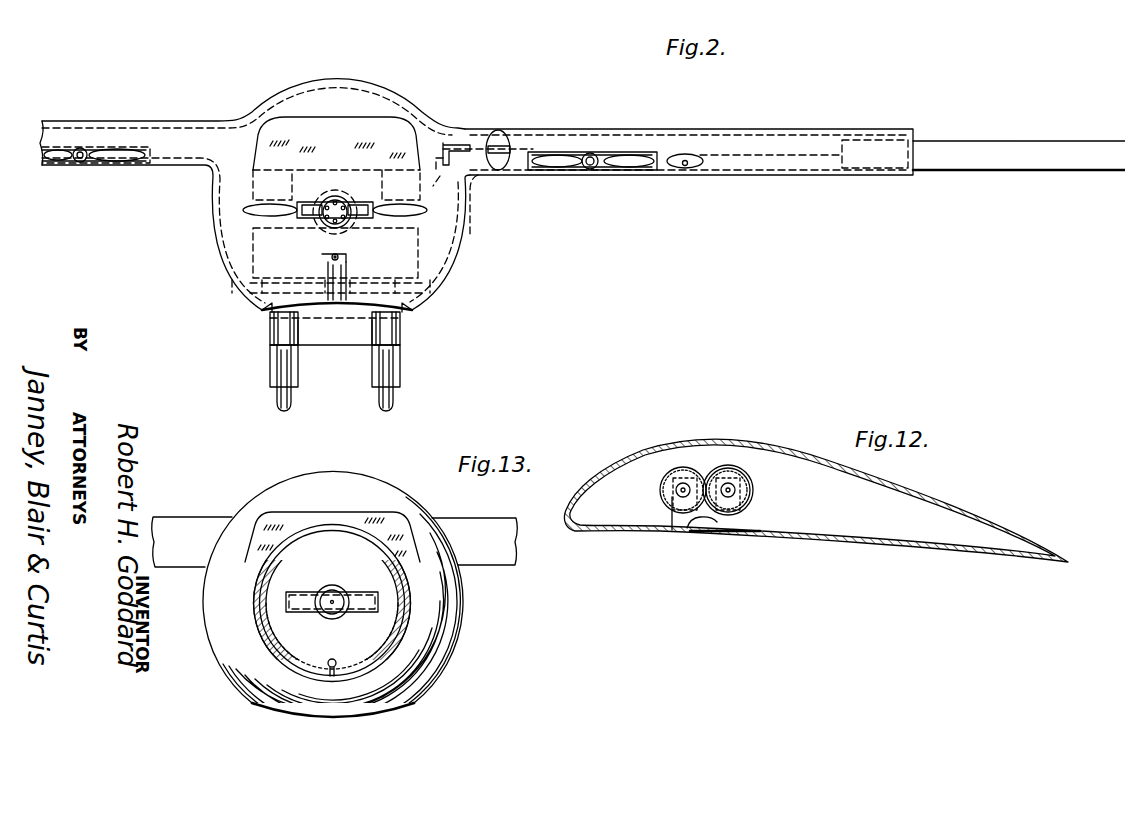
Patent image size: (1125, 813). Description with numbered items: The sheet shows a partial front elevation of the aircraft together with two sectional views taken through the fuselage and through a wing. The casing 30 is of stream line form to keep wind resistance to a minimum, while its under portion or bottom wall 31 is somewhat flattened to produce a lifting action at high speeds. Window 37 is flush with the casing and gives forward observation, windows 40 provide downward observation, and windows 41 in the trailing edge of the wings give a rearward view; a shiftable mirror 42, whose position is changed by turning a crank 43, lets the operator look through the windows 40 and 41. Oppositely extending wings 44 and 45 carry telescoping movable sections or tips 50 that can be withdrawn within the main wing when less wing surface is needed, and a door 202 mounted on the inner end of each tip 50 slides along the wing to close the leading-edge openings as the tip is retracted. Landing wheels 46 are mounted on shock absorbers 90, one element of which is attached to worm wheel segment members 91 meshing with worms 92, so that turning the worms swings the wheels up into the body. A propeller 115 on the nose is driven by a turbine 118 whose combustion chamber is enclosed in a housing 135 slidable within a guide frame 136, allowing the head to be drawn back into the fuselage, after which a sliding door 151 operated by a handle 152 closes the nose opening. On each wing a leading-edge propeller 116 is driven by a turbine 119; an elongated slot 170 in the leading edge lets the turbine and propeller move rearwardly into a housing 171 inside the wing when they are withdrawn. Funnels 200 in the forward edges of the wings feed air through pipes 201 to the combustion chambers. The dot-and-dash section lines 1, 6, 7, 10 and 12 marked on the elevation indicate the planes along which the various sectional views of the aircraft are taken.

In FIG. 2, the section line 1- 1 is at (348, 34).
In FIG. 2, the section line 6- 6 is at (651, 216).
In FIG. 2, the section line 7- 7 is at (1040, 212).
In FIG. 2, the section line 10- 10 is at (592, 238).
In FIG. 2, the section line 12 is at (508, 225).
In FIG. 2, the casing 30 is at (462, 258).
In FIG. 13, the casing 30 is at (462, 643).
In FIG. 2, the under portion 31 is at (352, 318).
In FIG. 13, the under portion 31 is at (333, 712).
In FIG. 2, the window 37 is at (362, 128).
In FIG. 13, the window 37 is at (380, 515).
In FIG. 2, the windows 40 is at (476, 178).
In FIG. 12, the windows 40 is at (712, 533).
In FIG. 12, the windows 41 is at (965, 510).
In FIG. 2, the shiftable mirror 42 is at (494, 132).
In FIG. 12, the shiftable mirror 42 is at (750, 464).
In FIG. 2, the crank 43 is at (450, 168).
In FIG. 2, the wing 44 is at (178, 110).
In FIG. 13, the wing 44 is at (198, 505).
In FIG. 2, the wing 45 is at (762, 130).
In FIG. 13, the wing 45 is at (259, 497).
In FIG. 12, the wing 45 is at (692, 447).
In FIG. 2, the landing wheels 46 is at (277, 366).
In FIG. 2, the wing tip 50 is at (1075, 146).
In FIG. 2, the shock absorbers 90 is at (370, 334).
In FIG. 2, the worm wheel segment members 91 is at (348, 270).
In FIG. 2, the worms 92 is at (331, 256).
In FIG. 2, the propeller 115 is at (398, 212).
In FIG. 2, the propeller 116 is at (116, 158).
In FIG. 2, the turbine 118 is at (338, 203).
In FIG. 2, the turbine 119 is at (83, 148).
In FIG. 13, the housing 135 is at (348, 596).
In FIG. 13, the guide frame 136 is at (334, 598).
In FIG. 13, the sliding door 151 is at (300, 665).
In FIG. 13, the handle 152 is at (335, 660).
In FIG. 2, the elongated slot 170 is at (146, 160).
In FIG. 2, the housing 171 is at (600, 150).
In FIG. 2, the funnel 200 is at (690, 155).
In FIG. 2, the pipes 201 is at (688, 166).
In FIG. 2, the door 202 is at (800, 176).